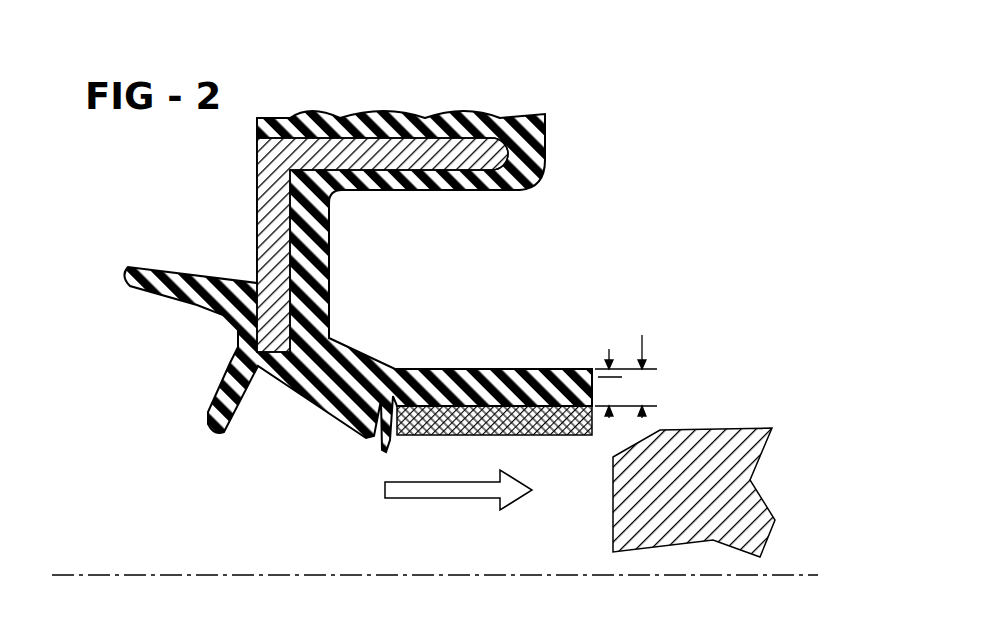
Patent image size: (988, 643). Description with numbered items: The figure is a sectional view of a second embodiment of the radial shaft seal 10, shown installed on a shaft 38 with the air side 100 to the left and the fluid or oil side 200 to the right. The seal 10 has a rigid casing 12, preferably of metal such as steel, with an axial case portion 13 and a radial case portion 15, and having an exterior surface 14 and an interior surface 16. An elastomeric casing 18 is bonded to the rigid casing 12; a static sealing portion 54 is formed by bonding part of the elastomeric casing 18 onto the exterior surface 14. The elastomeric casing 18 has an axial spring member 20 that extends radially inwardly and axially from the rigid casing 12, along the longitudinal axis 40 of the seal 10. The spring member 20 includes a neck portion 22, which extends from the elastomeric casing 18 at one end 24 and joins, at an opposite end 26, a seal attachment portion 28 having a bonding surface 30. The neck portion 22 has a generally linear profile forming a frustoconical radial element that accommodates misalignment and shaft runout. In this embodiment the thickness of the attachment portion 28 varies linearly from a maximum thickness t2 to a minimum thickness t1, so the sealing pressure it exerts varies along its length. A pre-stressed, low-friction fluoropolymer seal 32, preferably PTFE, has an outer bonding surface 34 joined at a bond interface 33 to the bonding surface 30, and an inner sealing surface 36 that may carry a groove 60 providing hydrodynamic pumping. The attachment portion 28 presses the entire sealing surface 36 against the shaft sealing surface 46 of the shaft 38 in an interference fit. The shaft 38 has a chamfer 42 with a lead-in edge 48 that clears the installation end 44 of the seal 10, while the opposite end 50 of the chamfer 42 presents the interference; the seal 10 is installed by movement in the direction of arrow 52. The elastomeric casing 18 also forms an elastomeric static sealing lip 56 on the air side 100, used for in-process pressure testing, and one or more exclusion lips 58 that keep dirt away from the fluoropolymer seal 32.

The radial shaft seal 10 is at (375, 96).
The rigid casing 12 is at (503, 118).
The axial case portion 13 is at (285, 118).
The exterior surface 14 is at (395, 110).
The radial case portion 15 is at (264, 240).
The interior surface 16 is at (330, 258).
The elastomeric casing 18 is at (332, 305).
The axial spring member 20 is at (362, 350).
The neck portion 22 is at (342, 353).
The end 24 is at (333, 338).
The opposite end 26 is at (413, 370).
The seal attachment portion 28 is at (520, 385).
The bonding surface 30 is at (565, 380).
The fluoropolymer seal 32 is at (384, 455).
The bond interface 33 is at (372, 442).
The bonding surface 34 is at (470, 370).
The sealing surface 36 is at (471, 431).
The shaft 38 is at (748, 467).
The longitudinal axis 40 is at (122, 575).
The chamfer 42 is at (645, 440).
The installation end 44 is at (595, 425).
The shaft sealing surface 46 is at (753, 428).
The lead-in edge 48 is at (612, 455).
The opposite end of chamfer 50 is at (655, 428).
The arrow 52 is at (465, 500).
The static sealing portion 54 is at (458, 108).
The elastomeric static sealing lip 56 is at (364, 414).
The exclusion lip 58 is at (226, 378).
The groove 60 is at (433, 436).
The air side 100 is at (150, 214).
The fluid side 200 is at (724, 391).
The minimum thickness t1 is at (609, 349).
The maximum thickness t2 is at (642, 345).